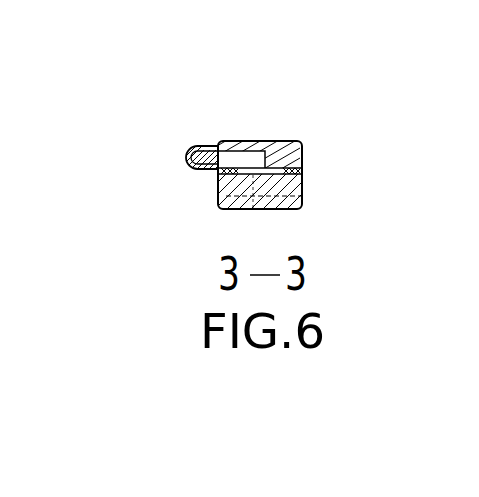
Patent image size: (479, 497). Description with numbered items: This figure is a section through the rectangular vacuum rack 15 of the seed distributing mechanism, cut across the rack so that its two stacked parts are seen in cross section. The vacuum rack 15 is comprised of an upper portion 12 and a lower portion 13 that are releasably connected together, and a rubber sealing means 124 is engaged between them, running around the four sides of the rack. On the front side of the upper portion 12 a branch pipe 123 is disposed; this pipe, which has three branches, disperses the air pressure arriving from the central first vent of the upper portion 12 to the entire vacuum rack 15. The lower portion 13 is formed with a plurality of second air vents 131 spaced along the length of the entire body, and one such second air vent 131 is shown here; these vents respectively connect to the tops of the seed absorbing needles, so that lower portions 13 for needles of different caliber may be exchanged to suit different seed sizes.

The upper portion 12 is at (296, 139).
The branch pipe 123 is at (186, 155).
The rubber sealing means 124 is at (298, 170).
The second air vent 131 is at (302, 196).
The lower portion 13 is at (226, 197).
The vacuum rack 15 is at (177, 120).